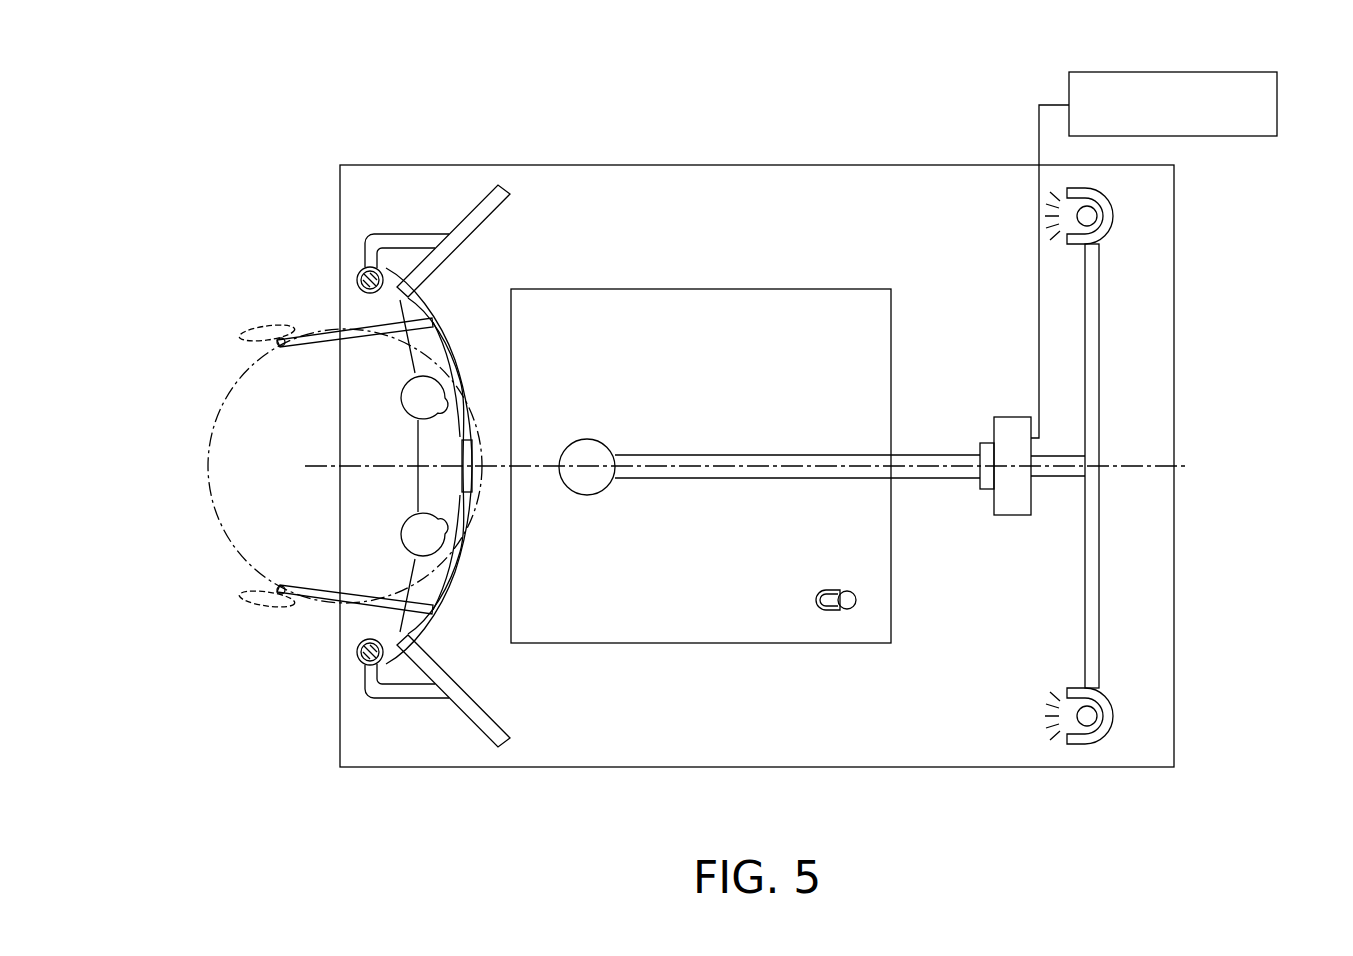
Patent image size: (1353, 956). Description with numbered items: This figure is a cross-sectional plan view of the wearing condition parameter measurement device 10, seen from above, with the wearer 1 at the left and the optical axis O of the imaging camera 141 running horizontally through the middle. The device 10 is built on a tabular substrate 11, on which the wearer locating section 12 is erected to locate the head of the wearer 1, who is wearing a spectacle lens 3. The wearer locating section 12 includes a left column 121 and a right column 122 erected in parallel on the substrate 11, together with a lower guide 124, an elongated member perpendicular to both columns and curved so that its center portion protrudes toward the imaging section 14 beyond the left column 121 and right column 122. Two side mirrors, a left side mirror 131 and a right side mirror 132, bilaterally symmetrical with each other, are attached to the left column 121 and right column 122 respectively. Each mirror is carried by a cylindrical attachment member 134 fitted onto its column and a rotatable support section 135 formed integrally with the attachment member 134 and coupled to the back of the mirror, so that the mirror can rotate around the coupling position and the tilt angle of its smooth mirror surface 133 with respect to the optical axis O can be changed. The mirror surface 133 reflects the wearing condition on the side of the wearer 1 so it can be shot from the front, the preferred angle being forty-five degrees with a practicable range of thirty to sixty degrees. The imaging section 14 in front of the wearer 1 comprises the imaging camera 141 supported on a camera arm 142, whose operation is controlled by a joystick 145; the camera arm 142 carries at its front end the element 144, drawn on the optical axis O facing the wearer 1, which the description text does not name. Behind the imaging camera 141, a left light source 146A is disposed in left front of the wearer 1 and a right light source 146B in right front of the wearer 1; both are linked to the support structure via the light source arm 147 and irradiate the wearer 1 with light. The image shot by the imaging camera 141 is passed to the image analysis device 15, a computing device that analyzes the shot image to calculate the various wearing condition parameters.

The wearer 1 is at (205, 466).
The spectacle lens 3 is at (458, 372).
The wearing condition parameter measurement device 10 is at (900, 80).
The substrate 11 is at (1000, 768).
The wearer locating section 12 is at (445, 628).
The imaging section 14 is at (826, 380).
The image analysis device 15 is at (1215, 72).
The left column 121 is at (364, 265).
The right column 122 is at (364, 667).
The lower guide 124 is at (440, 305).
The left side mirror 131 is at (507, 186).
The right side mirror 132 is at (507, 746).
The mirror surface 133 is at (500, 222).
The attachment member 134 is at (357, 282).
The rotatable support section 135 is at (420, 234).
The imaging camera 141 is at (994, 512).
The camera arm 142 is at (940, 455).
The objective lens 144 is at (598, 441).
The joystick 145 is at (858, 600).
The left light source 146A is at (1115, 212).
The right light source 146B is at (1115, 708).
The light source arm 147 is at (1100, 318).
The optical axis O is at (1165, 466).